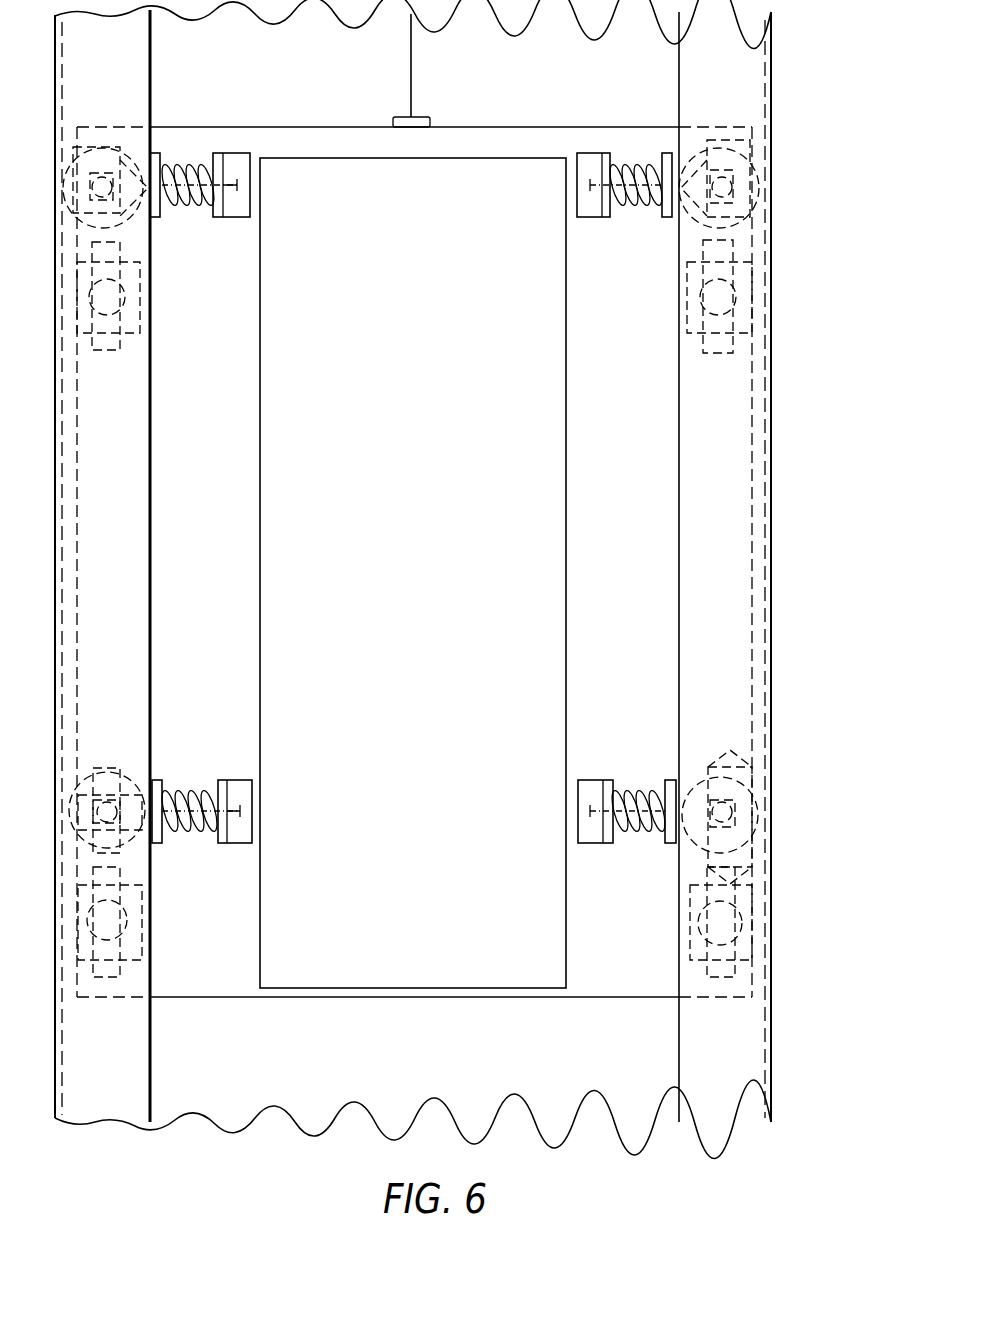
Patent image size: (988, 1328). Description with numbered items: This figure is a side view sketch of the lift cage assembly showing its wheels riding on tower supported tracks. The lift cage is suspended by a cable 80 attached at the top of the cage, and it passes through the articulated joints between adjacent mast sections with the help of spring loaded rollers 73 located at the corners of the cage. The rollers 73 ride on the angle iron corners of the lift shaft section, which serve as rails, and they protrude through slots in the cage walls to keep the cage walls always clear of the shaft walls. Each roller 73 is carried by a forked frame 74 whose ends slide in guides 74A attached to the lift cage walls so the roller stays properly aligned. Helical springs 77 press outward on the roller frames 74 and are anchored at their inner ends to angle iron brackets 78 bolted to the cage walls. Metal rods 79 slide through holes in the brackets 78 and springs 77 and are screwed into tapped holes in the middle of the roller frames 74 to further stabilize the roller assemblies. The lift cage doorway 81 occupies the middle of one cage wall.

The spring loaded rollers 73 is at (770, 222).
The forked frames 74 is at (748, 790).
The guides 74A is at (750, 848).
The helical springs 77 is at (194, 793).
The angle iron brackets 78 is at (240, 203).
The metal rods 79 is at (243, 780).
The cable 80 is at (411, 95).
The lift cage doorway 81 is at (566, 432).